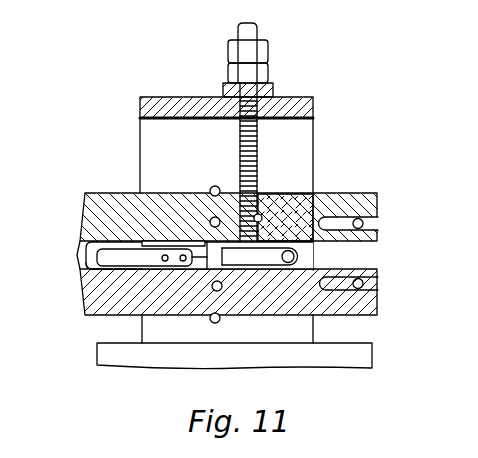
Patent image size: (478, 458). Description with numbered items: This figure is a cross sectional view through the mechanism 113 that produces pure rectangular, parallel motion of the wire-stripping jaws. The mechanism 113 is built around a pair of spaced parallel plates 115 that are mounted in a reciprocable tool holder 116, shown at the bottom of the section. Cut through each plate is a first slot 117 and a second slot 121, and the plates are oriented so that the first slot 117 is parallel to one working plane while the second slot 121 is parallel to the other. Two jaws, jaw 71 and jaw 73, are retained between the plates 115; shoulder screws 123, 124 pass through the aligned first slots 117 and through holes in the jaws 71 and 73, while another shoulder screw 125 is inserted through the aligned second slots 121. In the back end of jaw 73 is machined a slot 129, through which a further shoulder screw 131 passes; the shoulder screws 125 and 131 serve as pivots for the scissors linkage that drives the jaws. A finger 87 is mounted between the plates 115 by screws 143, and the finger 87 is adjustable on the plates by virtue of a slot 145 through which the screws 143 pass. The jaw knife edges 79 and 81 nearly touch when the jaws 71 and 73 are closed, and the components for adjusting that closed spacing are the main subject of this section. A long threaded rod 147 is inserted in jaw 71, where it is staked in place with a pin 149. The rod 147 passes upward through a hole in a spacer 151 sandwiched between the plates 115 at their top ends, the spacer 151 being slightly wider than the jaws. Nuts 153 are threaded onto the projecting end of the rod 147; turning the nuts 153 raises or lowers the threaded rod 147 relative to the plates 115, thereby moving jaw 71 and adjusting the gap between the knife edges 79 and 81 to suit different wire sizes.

The mechanism 113 is at (372, 120).
The nuts 153 is at (268, 43).
The threaded rod 147 is at (274, 96).
The spacer 151 is at (313, 98).
The plates 115 is at (141, 127).
The jaw 71 is at (365, 192).
The shoulder screw 125 is at (290, 249).
The slot 129 is at (373, 218).
The shoulder screw 131 is at (366, 228).
The jaw 73 is at (378, 305).
The screws 143 is at (161, 286).
The jaw knife edge 79 is at (80, 252).
The jaw knife edge 81 is at (77, 260).
The finger 87 is at (108, 258).
The second slot 121 is at (273, 250).
The first slot 117 is at (216, 186).
The shoulder screw 123 is at (209, 220).
The pin 149 is at (262, 214).
The shoulder screw 124 is at (222, 291).
The slot 145 is at (204, 315).
The tool holder 116 is at (360, 357).